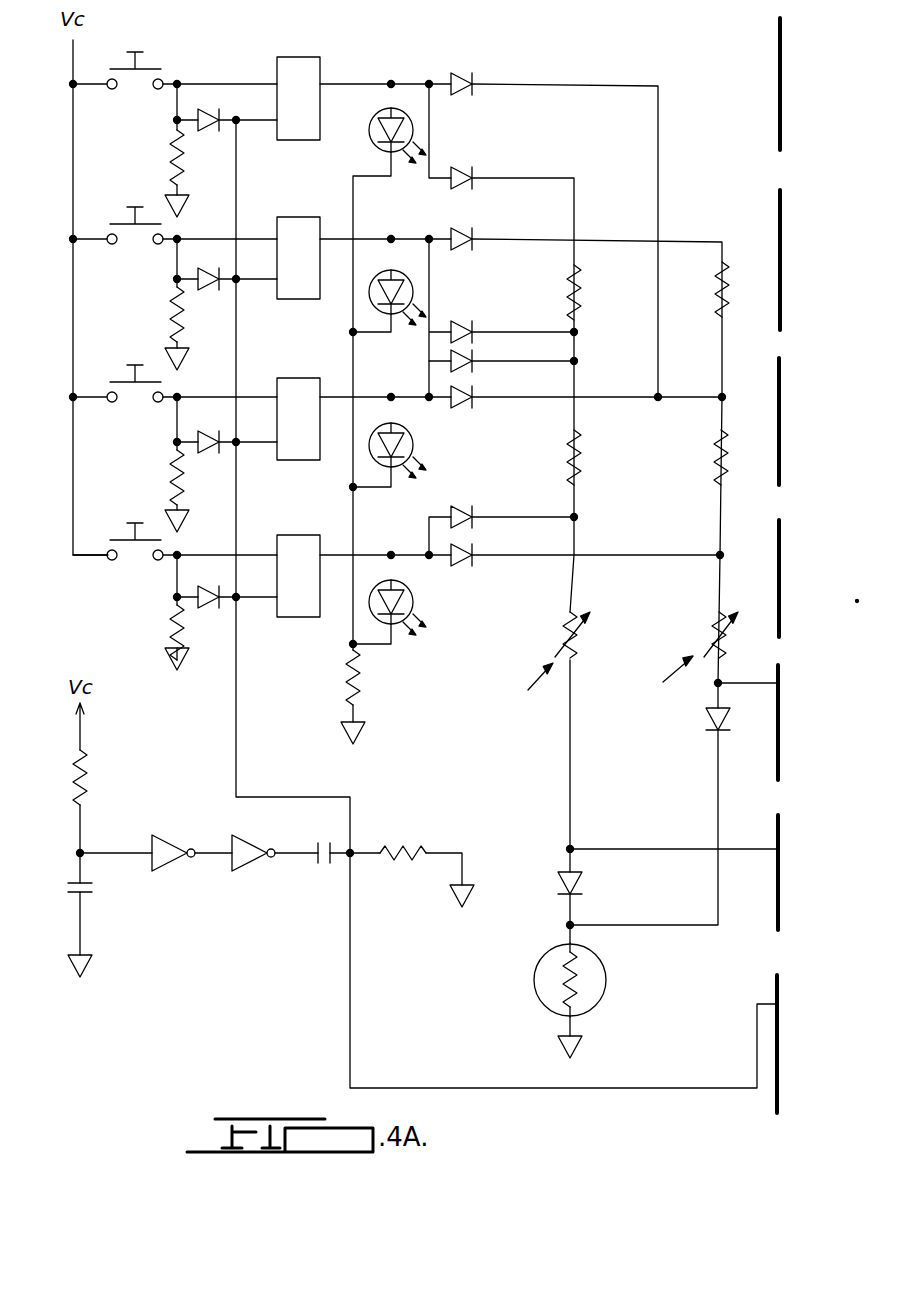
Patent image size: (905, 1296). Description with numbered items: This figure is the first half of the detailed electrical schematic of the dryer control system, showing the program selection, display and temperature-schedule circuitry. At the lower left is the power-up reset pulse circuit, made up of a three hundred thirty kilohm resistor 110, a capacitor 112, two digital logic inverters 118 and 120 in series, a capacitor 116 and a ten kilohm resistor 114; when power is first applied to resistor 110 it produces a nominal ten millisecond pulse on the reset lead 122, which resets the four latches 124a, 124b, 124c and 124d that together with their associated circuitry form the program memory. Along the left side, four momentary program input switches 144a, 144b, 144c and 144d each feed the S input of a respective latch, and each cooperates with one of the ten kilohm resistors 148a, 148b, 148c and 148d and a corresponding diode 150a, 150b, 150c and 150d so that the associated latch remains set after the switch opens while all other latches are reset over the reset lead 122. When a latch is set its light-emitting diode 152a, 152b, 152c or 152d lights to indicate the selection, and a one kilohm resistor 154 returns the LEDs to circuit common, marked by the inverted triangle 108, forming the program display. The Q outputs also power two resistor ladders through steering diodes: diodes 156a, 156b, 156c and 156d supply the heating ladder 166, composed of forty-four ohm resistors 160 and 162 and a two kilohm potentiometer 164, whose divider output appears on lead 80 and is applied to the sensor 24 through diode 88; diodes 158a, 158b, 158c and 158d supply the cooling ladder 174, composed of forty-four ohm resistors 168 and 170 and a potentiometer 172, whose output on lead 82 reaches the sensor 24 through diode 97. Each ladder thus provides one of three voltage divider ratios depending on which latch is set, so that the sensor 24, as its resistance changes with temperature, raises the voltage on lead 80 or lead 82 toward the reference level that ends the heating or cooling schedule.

The switch 144a is at (148, 68).
The switch 144b is at (112, 224).
The switch 144c is at (112, 382).
The switch 144d is at (112, 540).
The 10K resistor 148a is at (176, 150).
The 10K resistor 148b is at (176, 305).
The 10K resistor 148c is at (176, 465).
The 10K resistor 148d is at (176, 618).
The diode 150a is at (214, 134).
The diode 150b is at (214, 292).
The diode 150c is at (214, 455).
The diode 150d is at (214, 610).
The latch 124a is at (297, 142).
The latch 124b is at (297, 301).
The latch 124c is at (297, 462).
The latch 124d is at (297, 619).
The light-emitting diode 152a is at (370, 128).
The light-emitting diode 152b is at (412, 290).
The light-emitting diode 152c is at (412, 448).
The light-emitting diode 152d is at (412, 604).
The diode 156a is at (462, 95).
The diode 156b is at (465, 250).
The diode 156c is at (462, 405).
The diode 156d is at (462, 564).
The diode 158a is at (464, 186).
The diode 158b is at (460, 322).
The diode 158c is at (462, 369).
The diode 158d is at (458, 512).
The 1K resistor 154 is at (362, 690).
The 44 ohm resistor 168 is at (580, 296).
The 44 ohm resistor 160 is at (720, 312).
The 44 ohm resistor 170 is at (582, 462).
The 44 ohm resistor 162 is at (716, 452).
The 2K potentiometer 172 is at (580, 644).
The resistor ladder 174 is at (521, 691).
The 2K potentiometer 164 is at (716, 622).
The resistor ladder 166 is at (661, 675).
The diode 88 is at (706, 720).
The lead 80 is at (758, 690).
The lead 82 is at (753, 853).
The diode 97 is at (580, 880).
The sensor 24 is at (594, 1010).
The inverted triangle 108 is at (580, 1052).
The reset lead 122 is at (706, 1090).
The 330K resistor 110 is at (92, 782).
The 0.1 mf capacitor 112 is at (90, 898).
The digital logic inverter 118 is at (176, 872).
The digital logic inverter 120 is at (244, 874).
The 0.1 mf capacitor 116 is at (316, 868).
The 10K resistor 114 is at (410, 848).